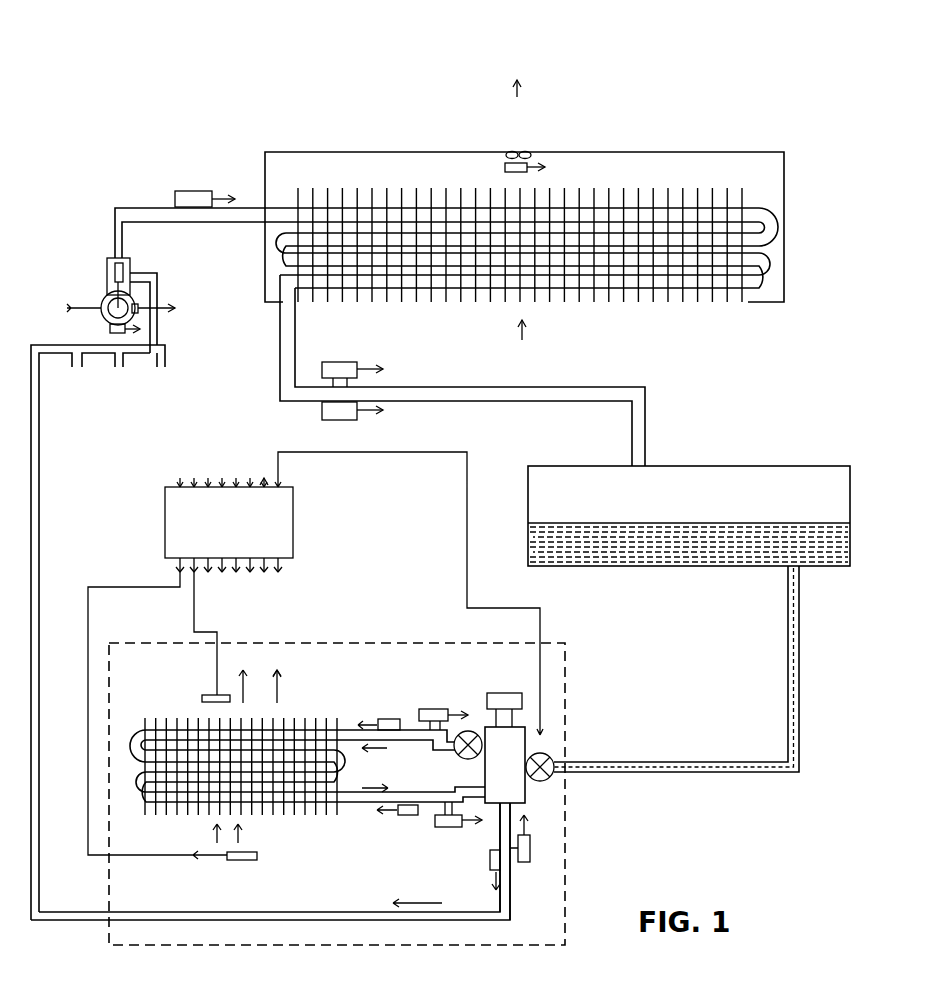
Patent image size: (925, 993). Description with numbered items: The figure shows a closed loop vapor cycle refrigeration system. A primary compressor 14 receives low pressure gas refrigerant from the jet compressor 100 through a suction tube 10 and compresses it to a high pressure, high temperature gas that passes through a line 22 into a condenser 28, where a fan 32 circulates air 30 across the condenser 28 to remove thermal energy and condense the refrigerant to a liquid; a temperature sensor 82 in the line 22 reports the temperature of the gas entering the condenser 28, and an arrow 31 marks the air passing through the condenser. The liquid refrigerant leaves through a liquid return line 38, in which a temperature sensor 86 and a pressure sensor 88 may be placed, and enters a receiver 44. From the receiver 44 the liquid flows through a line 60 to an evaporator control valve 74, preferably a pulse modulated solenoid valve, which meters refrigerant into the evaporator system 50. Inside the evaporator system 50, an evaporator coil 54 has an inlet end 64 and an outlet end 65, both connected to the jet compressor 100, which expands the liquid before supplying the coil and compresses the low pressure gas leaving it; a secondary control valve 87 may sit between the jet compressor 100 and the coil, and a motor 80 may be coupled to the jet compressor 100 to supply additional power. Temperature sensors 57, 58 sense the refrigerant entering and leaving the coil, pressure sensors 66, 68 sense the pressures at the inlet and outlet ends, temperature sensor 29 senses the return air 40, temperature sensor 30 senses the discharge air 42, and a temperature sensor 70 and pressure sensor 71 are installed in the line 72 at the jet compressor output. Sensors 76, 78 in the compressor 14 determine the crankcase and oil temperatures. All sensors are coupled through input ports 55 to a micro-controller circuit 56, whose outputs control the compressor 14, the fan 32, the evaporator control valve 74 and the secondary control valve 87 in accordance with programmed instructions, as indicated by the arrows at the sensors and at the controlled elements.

The suction tube 10 is at (38, 478).
The primary compressor 14 is at (108, 282).
The line 22 is at (155, 208).
The condenser 28 is at (283, 152).
The temperature sensor 29 is at (238, 860).
The air / temperature sensor 30 is at (518, 95).
The air flow through condenser 31 is at (546, 331).
The fan 32 is at (505, 167).
The liquid return line 38 is at (280, 380).
The air returning to the evaporator coil 40 is at (249, 833).
The air leaving the evaporator coil 42 is at (279, 686).
The receiver 44 is at (480, 689).
The evaporator system 50 is at (282, 643).
The evaporator coil 54 is at (185, 707).
The input ports 55 is at (283, 570).
The micro-controller circuit 56 is at (165, 548).
The temperature sensor 57 is at (283, 470).
The temperature sensor 58 is at (417, 815).
The line 60 is at (800, 725).
The inlet end 64 is at (445, 748).
The outlet end 65 is at (447, 792).
The pressure sensor 66 is at (443, 706).
The pressure sensor 68 is at (440, 827).
The temperature sensor 70 is at (490, 858).
The pressure sensor 71 is at (530, 858).
The line 72 is at (512, 907).
The evaporator control valve 74 is at (550, 777).
The sensor 76 is at (115, 330).
The sensor 78 is at (133, 307).
The motor 80 is at (493, 693).
The temperature sensor 82 is at (188, 191).
The temperature sensor 86 is at (340, 420).
The secondary control valve 87 is at (477, 732).
The pressure sensor 88 is at (337, 362).
The jet compressor 100 is at (528, 800).